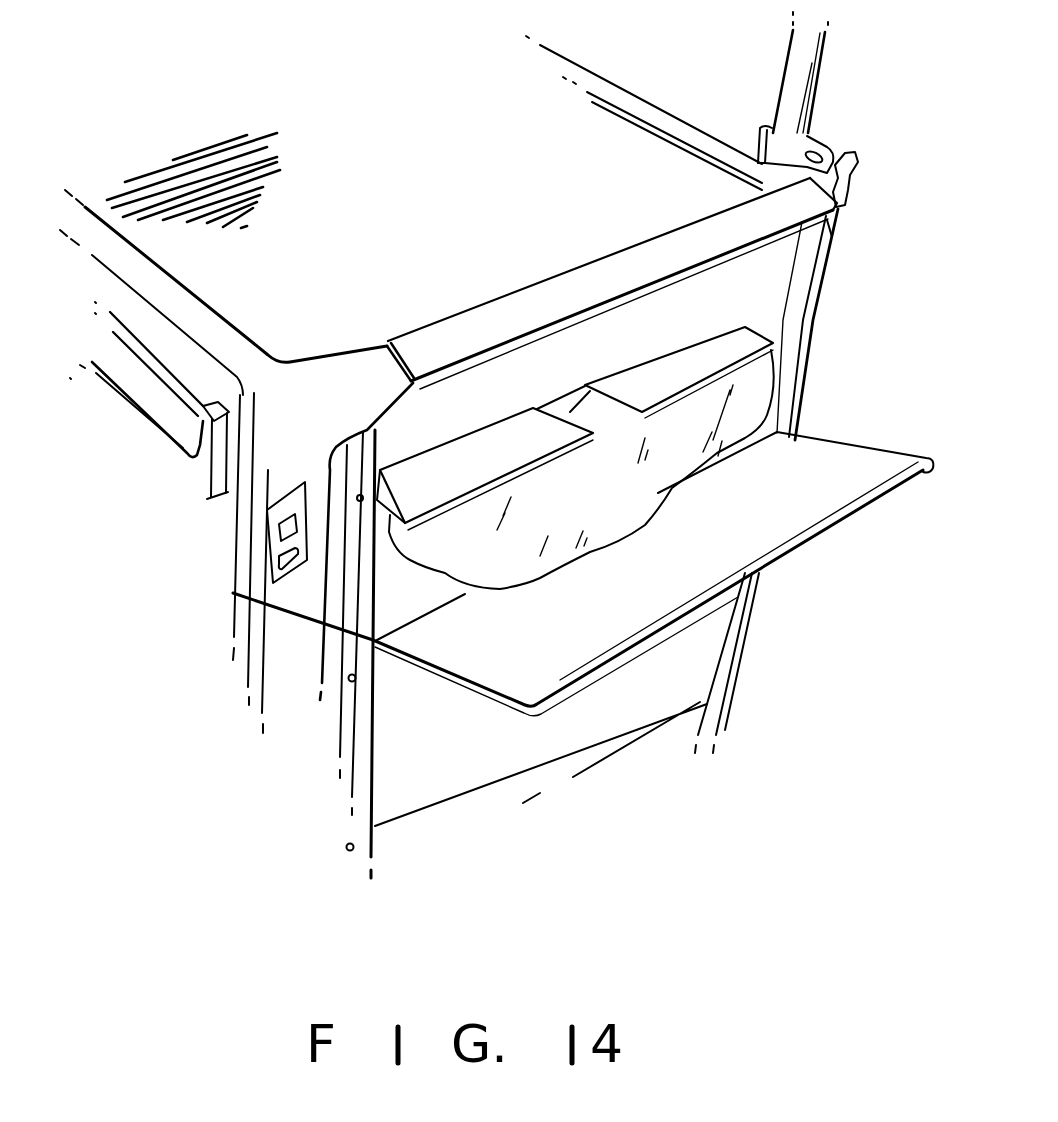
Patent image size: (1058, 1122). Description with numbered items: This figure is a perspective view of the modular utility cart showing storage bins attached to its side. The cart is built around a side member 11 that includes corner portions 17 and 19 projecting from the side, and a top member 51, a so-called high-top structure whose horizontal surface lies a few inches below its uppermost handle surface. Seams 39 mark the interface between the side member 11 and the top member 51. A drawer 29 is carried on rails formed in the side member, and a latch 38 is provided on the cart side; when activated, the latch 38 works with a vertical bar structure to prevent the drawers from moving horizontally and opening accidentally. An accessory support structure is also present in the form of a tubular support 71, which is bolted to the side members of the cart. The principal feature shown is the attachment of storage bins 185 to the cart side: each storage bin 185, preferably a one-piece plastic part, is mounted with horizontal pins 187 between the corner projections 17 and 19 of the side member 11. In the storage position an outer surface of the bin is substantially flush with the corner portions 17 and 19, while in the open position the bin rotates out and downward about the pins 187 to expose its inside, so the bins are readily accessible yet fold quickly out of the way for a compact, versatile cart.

The cart side member 11 is at (866, 295).
The corner portion 17 is at (276, 776).
The corner portion 19 is at (733, 660).
The drawer 29 is at (163, 403).
The latch 38 is at (277, 490).
The seam 39 is at (288, 616).
The top member 51 is at (441, 200).
The tubular support 71 is at (803, 47).
The storage bin 185 is at (720, 333).
The horizontal pin 187 is at (356, 498).